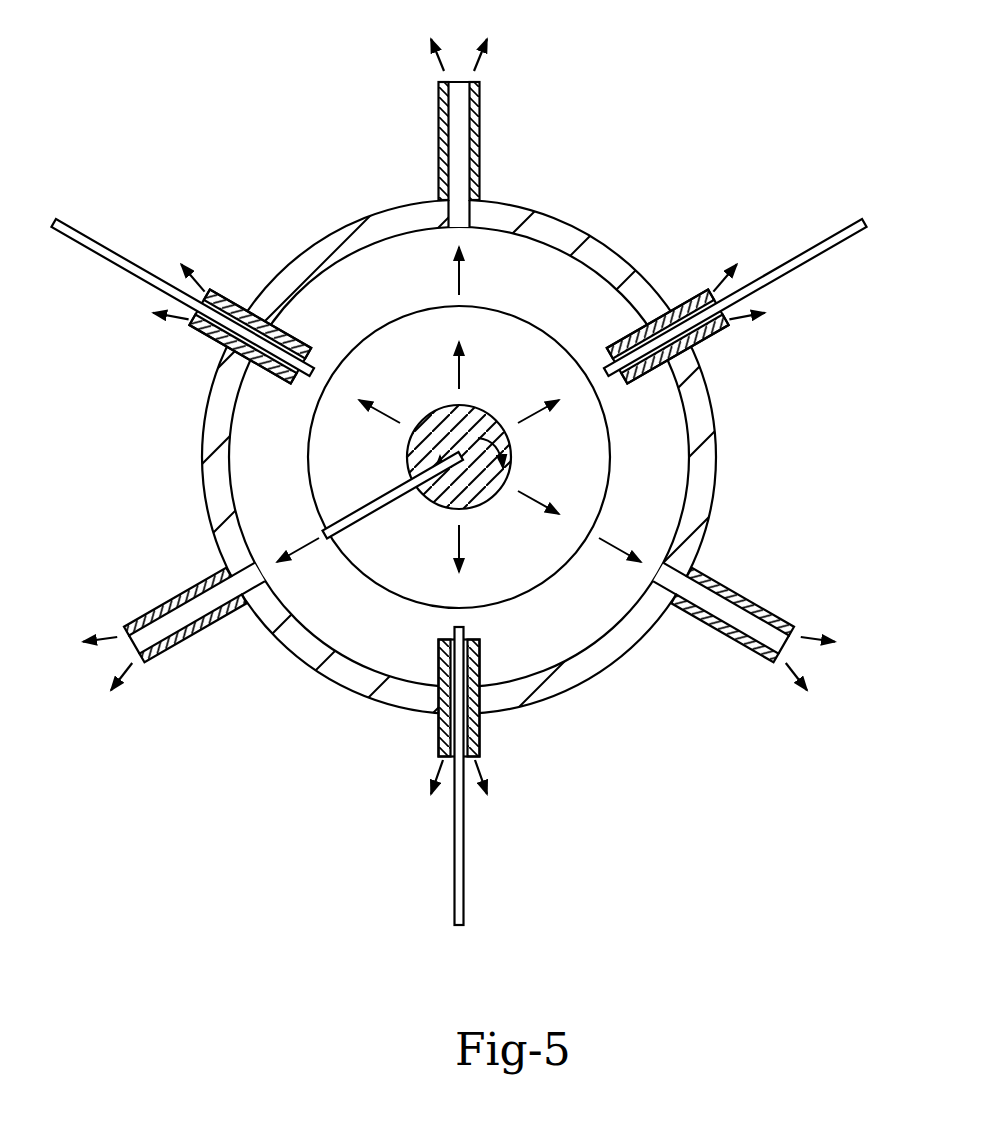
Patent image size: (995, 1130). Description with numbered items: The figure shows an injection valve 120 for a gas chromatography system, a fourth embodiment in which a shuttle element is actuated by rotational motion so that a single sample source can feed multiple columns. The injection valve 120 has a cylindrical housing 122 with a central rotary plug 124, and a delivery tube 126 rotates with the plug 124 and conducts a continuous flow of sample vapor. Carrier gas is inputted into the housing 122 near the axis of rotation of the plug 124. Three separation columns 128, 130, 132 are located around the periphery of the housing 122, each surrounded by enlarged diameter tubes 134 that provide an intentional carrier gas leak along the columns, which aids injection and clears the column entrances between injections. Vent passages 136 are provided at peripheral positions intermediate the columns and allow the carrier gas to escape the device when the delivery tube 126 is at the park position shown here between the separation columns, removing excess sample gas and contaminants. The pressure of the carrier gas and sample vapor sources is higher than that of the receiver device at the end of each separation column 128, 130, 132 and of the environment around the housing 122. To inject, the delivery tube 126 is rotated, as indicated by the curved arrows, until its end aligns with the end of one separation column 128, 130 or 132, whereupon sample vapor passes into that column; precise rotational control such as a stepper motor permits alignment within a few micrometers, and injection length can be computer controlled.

The injection valve 120 is at (592, 176).
The cylindrical housing 122 is at (712, 522).
The central rotary plug 124 is at (657, 473).
The delivery tube 126 is at (364, 505).
The separation column 128 is at (95, 252).
The separation column 130 is at (785, 262).
The separation column 132 is at (465, 877).
The enlarged diameter tubes 134 is at (204, 338).
The vent passages 136 is at (437, 148).